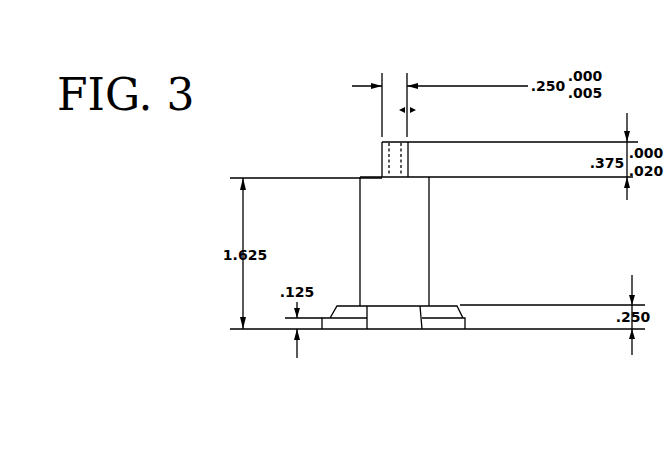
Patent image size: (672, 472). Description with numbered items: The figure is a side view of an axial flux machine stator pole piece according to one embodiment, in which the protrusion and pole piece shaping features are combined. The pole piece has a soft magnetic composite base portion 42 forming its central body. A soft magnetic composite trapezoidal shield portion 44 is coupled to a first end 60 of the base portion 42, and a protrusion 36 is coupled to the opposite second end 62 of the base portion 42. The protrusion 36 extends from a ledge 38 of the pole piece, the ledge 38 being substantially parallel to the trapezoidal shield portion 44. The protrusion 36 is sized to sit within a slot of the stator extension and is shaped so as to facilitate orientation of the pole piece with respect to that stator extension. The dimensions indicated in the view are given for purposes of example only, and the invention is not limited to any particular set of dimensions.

The protrusion 36 is at (382, 157).
The ledge 38 is at (418, 175).
The base portion 42 is at (418, 246).
The trapezoidal shield portion 44 is at (460, 345).
The first end 60 is at (359, 312).
The second end 62 is at (360, 185).